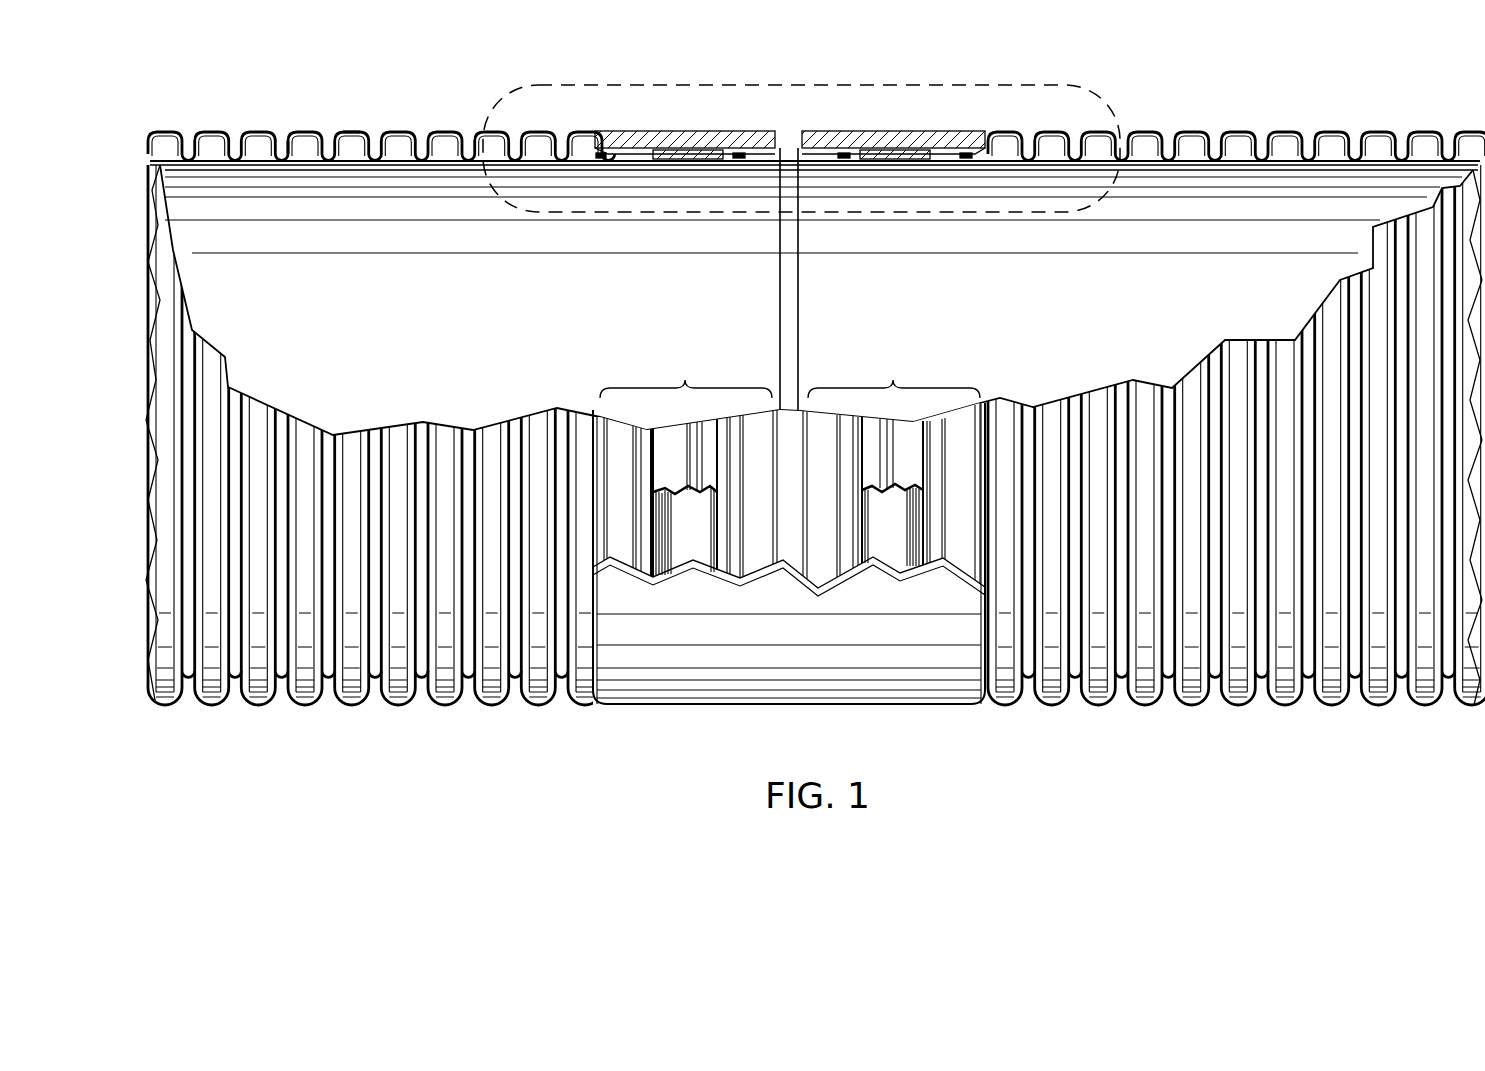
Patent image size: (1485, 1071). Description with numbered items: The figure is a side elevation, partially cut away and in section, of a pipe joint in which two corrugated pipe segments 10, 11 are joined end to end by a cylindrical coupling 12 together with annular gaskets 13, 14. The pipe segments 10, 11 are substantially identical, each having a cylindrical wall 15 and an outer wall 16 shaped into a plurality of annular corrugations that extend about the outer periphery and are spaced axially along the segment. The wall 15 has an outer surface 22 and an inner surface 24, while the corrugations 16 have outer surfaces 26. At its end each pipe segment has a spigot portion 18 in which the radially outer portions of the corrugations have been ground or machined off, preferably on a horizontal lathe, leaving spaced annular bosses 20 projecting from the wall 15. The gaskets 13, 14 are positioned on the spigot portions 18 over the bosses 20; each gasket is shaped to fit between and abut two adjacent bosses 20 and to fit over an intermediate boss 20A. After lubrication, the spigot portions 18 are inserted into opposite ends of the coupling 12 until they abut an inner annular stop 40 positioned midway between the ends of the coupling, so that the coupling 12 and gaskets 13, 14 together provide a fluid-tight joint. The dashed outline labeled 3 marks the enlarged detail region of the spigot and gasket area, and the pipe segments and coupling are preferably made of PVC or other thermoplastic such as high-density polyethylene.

The detail region shown in FIG. 3 is at (1055, 83).
The corrugated pipe segment 10 is at (456, 713).
The corrugated pipe segment 11 is at (1095, 713).
The cylindrical coupling 12 is at (667, 704).
The annular gasket 13 is at (888, 530).
The annular gasket 14 is at (692, 525).
The cylindrical wall 15 is at (212, 157).
The outer wall 16 is at (262, 137).
The spigot portion 18 is at (790, 372).
The annular boss 20 is at (637, 157).
The intermediate boss 20A is at (697, 150).
The outer surface of wall 22 is at (305, 156).
The inner surface of wall 24 is at (255, 165).
The outer surface of corrugation 26 is at (355, 135).
The inner annular stop 40 is at (789, 160).